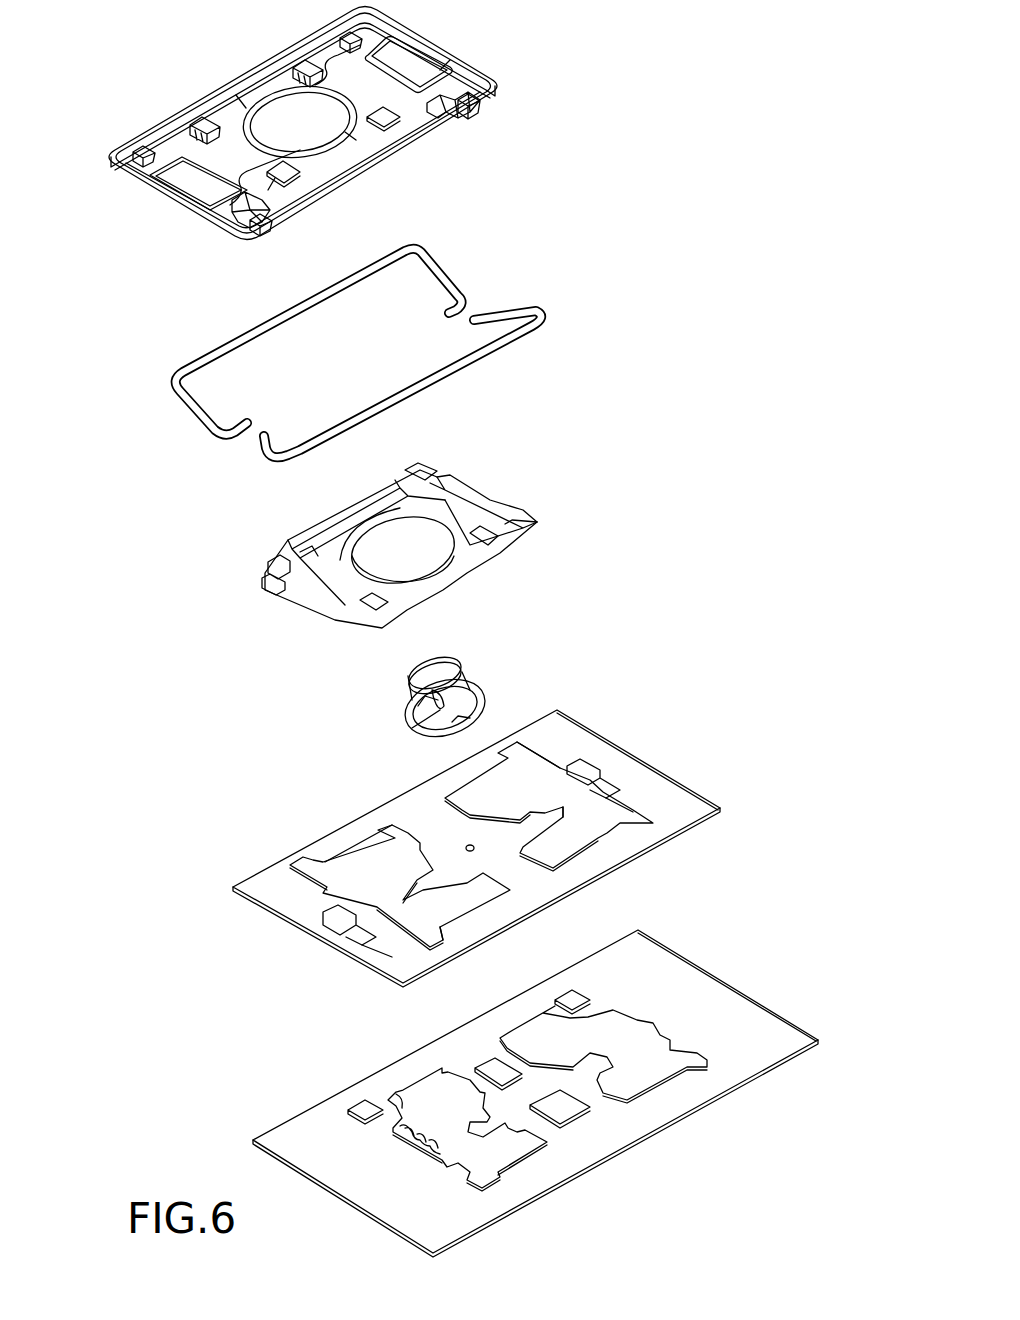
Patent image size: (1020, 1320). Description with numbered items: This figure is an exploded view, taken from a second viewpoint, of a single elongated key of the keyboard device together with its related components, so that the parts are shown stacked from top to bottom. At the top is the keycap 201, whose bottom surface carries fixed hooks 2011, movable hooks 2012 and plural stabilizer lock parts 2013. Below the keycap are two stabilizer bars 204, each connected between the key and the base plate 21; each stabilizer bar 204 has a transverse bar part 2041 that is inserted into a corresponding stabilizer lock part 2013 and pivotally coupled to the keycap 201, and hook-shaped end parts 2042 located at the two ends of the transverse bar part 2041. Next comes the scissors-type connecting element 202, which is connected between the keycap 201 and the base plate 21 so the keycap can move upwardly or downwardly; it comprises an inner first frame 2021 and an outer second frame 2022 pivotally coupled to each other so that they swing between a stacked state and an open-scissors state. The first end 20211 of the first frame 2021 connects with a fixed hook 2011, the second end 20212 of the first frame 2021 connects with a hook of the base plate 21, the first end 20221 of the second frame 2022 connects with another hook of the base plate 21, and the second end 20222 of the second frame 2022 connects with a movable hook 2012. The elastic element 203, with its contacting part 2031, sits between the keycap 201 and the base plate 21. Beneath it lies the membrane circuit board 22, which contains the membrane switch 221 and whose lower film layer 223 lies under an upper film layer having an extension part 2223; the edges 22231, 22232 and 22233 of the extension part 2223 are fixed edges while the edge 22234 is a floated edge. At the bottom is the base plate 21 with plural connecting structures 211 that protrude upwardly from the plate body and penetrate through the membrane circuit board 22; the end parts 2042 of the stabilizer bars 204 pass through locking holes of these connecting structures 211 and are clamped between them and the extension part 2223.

The keycap 201 is at (455, 43).
The fixed hook 2011 is at (297, 62).
The movable hook 2012 is at (438, 108).
The stabilizer lock part 2013 is at (347, 36).
The stabilizer bar 204 is at (332, 373).
The transverse bar part 2041 is at (272, 327).
The end part 2042 is at (458, 297).
The connecting element 202 is at (453, 555).
The first frame 2021 is at (401, 563).
The first end of the first frame 20211 is at (368, 512).
The second end of the first frame 20212 is at (440, 583).
The second frame 2022 is at (389, 531).
The first end of the second frame 20221 is at (305, 577).
The second end of the second frame 20222 is at (513, 540).
The elastic element 203 is at (444, 696).
The contacting part 2031 is at (433, 733).
The membrane circuit board 22 is at (481, 847).
The membrane switch 221 is at (462, 847).
The lower film layer 223 is at (687, 810).
The extension part 2223 is at (456, 847).
The edge of the extension part 22231 is at (590, 763).
The edge of the extension part 22232 is at (607, 797).
The edge of the extension part 22233 is at (570, 760).
The edge of the extension part 22234 is at (560, 848).
The base plate 21 is at (535, 1093).
The connecting structure 211 is at (753, 1063).